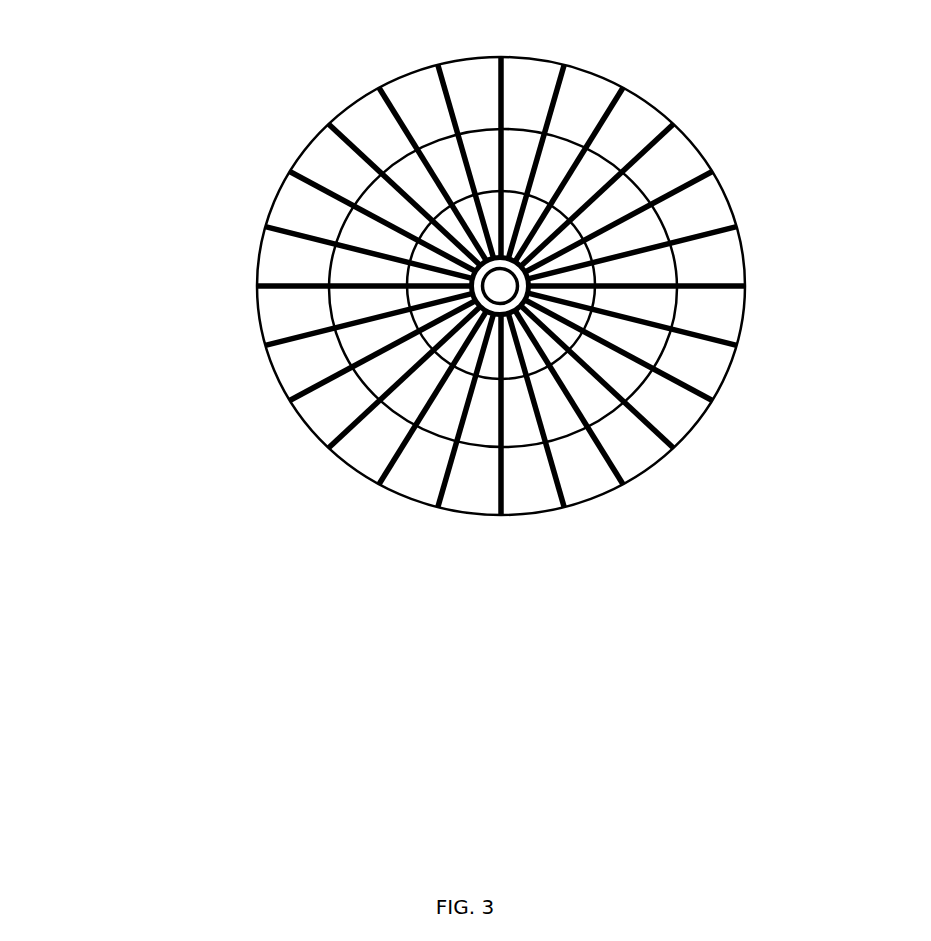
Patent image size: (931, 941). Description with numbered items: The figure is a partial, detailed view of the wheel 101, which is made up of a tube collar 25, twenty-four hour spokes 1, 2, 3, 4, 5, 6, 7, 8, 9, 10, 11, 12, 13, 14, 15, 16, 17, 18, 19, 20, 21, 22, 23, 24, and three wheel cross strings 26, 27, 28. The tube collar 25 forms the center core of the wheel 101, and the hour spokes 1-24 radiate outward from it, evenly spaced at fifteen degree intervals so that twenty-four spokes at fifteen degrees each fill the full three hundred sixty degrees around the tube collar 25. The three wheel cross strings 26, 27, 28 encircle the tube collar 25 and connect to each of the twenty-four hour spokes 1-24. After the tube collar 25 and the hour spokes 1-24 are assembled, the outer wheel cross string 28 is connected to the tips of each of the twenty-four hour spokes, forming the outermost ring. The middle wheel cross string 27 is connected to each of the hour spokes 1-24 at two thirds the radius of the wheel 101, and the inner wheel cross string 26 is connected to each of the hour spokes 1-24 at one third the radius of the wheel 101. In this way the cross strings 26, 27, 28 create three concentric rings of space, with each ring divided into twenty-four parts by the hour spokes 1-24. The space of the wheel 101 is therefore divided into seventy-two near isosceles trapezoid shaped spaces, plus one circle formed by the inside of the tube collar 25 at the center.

The wheel 101 is at (198, 153).
The hour spoke 1 is at (450, 100).
The hour spoke 2 is at (400, 103).
The hour spoke 3 is at (348, 128).
The hour spoke 4 is at (317, 183).
The hour spoke 5 is at (297, 230).
The hour spoke 6 is at (277, 285).
The hour spoke 7 is at (297, 343).
The hour spoke 8 is at (325, 388).
The hour spoke 9 is at (340, 443).
The hour spoke 10 is at (390, 468).
The hour spoke 11 is at (443, 482).
The hour spoke 12 is at (497, 490).
The hour spoke 13 is at (558, 490).
The hour spoke 14 is at (605, 470).
The hour spoke 15 is at (658, 440).
The hour spoke 16 is at (690, 400).
The hour spoke 17 is at (722, 348).
The hour spoke 18 is at (738, 293).
The hour spoke 19 is at (712, 233).
The hour spoke 20 is at (703, 177).
The hour spoke 21 is at (662, 132).
The hour spoke 22 is at (607, 107).
The hour spoke 23 is at (560, 85).
The hour spoke 24 is at (505, 83).
The tube collar 25 is at (473, 305).
The inner wheel cross string 26 is at (572, 225).
The middle wheel cross string 27 is at (668, 223).
The outer wheel cross string 28 is at (748, 272).